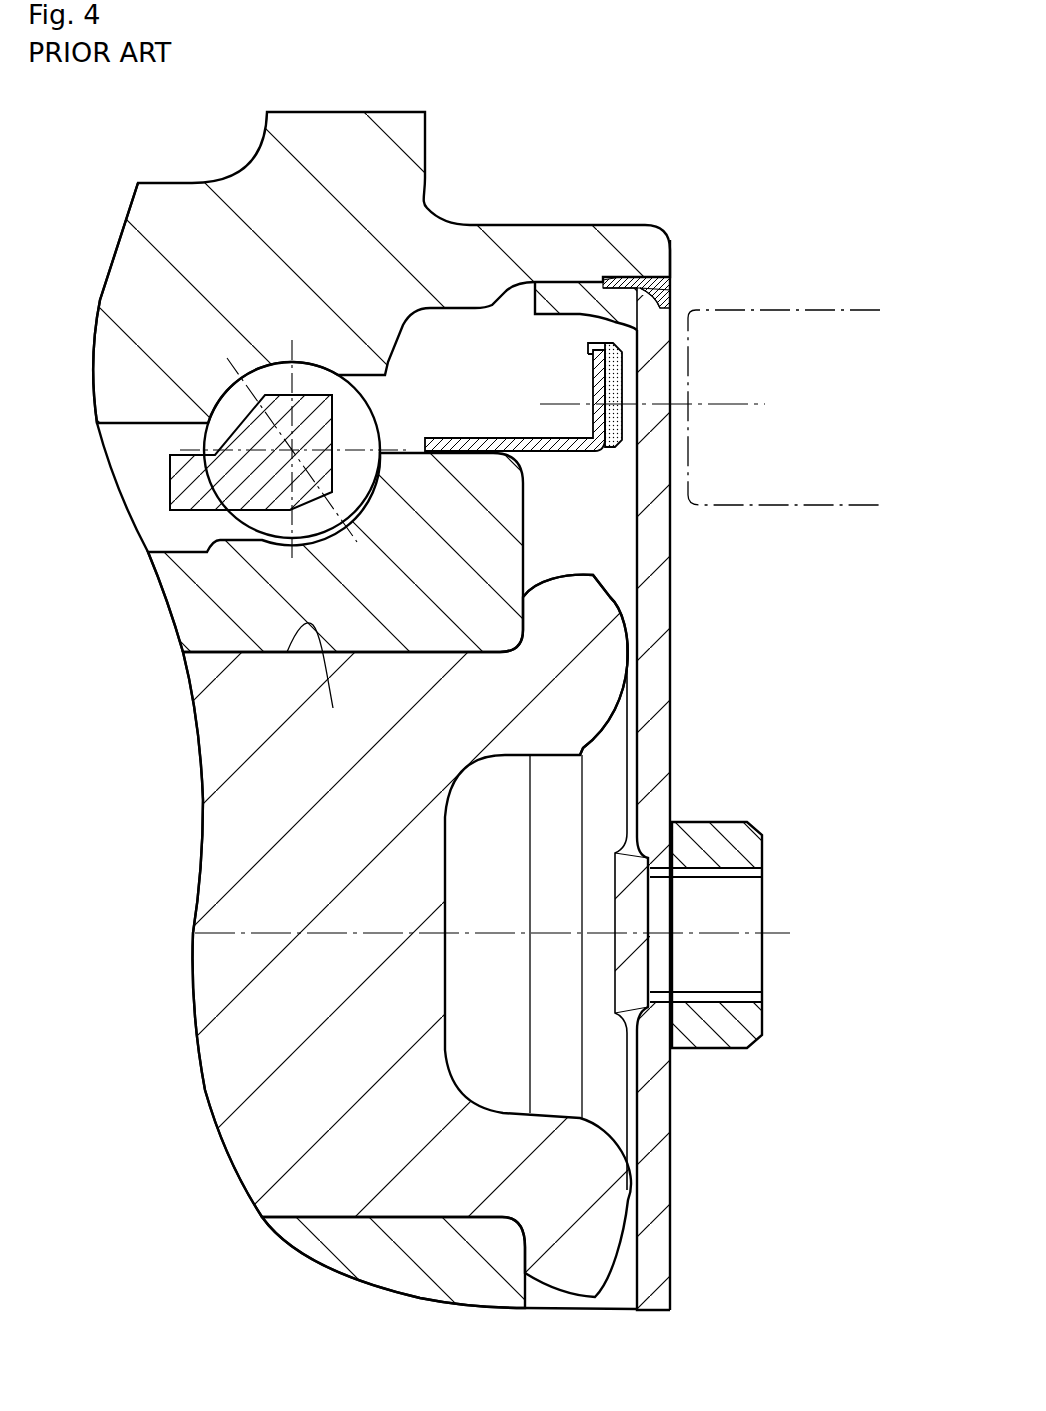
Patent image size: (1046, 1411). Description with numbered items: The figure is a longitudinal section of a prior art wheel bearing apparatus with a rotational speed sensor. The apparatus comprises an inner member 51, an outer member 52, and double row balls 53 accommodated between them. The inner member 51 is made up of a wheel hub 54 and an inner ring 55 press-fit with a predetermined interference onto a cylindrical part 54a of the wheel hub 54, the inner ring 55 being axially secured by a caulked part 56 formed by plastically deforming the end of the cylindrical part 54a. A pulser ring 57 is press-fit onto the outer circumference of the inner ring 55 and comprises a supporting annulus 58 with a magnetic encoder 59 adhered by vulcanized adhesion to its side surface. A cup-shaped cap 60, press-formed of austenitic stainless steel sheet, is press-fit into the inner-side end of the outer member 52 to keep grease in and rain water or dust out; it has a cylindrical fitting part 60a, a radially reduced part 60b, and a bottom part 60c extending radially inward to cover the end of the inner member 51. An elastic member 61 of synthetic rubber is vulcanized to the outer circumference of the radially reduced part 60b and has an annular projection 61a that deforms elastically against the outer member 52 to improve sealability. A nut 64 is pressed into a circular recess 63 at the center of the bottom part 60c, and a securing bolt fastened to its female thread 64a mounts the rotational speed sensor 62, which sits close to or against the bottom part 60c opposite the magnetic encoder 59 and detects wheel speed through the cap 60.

The inner member 51 is at (217, 713).
The outer member 52 is at (143, 263).
The double row balls 53 is at (215, 440).
The wheel hub 54 is at (215, 848).
The cylindrical part 54a is at (323, 683).
The inner ring 55 is at (190, 595).
The caulked part 56 is at (598, 632).
The pulser ring 57 is at (595, 395).
The supporting annulus 58 is at (603, 390).
The magnetic encoder 59 is at (607, 358).
The cap 60 is at (652, 736).
The cylindrical fitting part 60a is at (555, 290).
The radially reduced part 60b is at (618, 300).
The bottom part 60c is at (668, 700).
The elastic member 61 is at (692, 269).
The annular projection 61a is at (675, 244).
The rotational speed sensor 62 is at (838, 322).
The circular recess 63 is at (640, 898).
The nut 64 is at (757, 935).
The female thread 64a is at (730, 998).